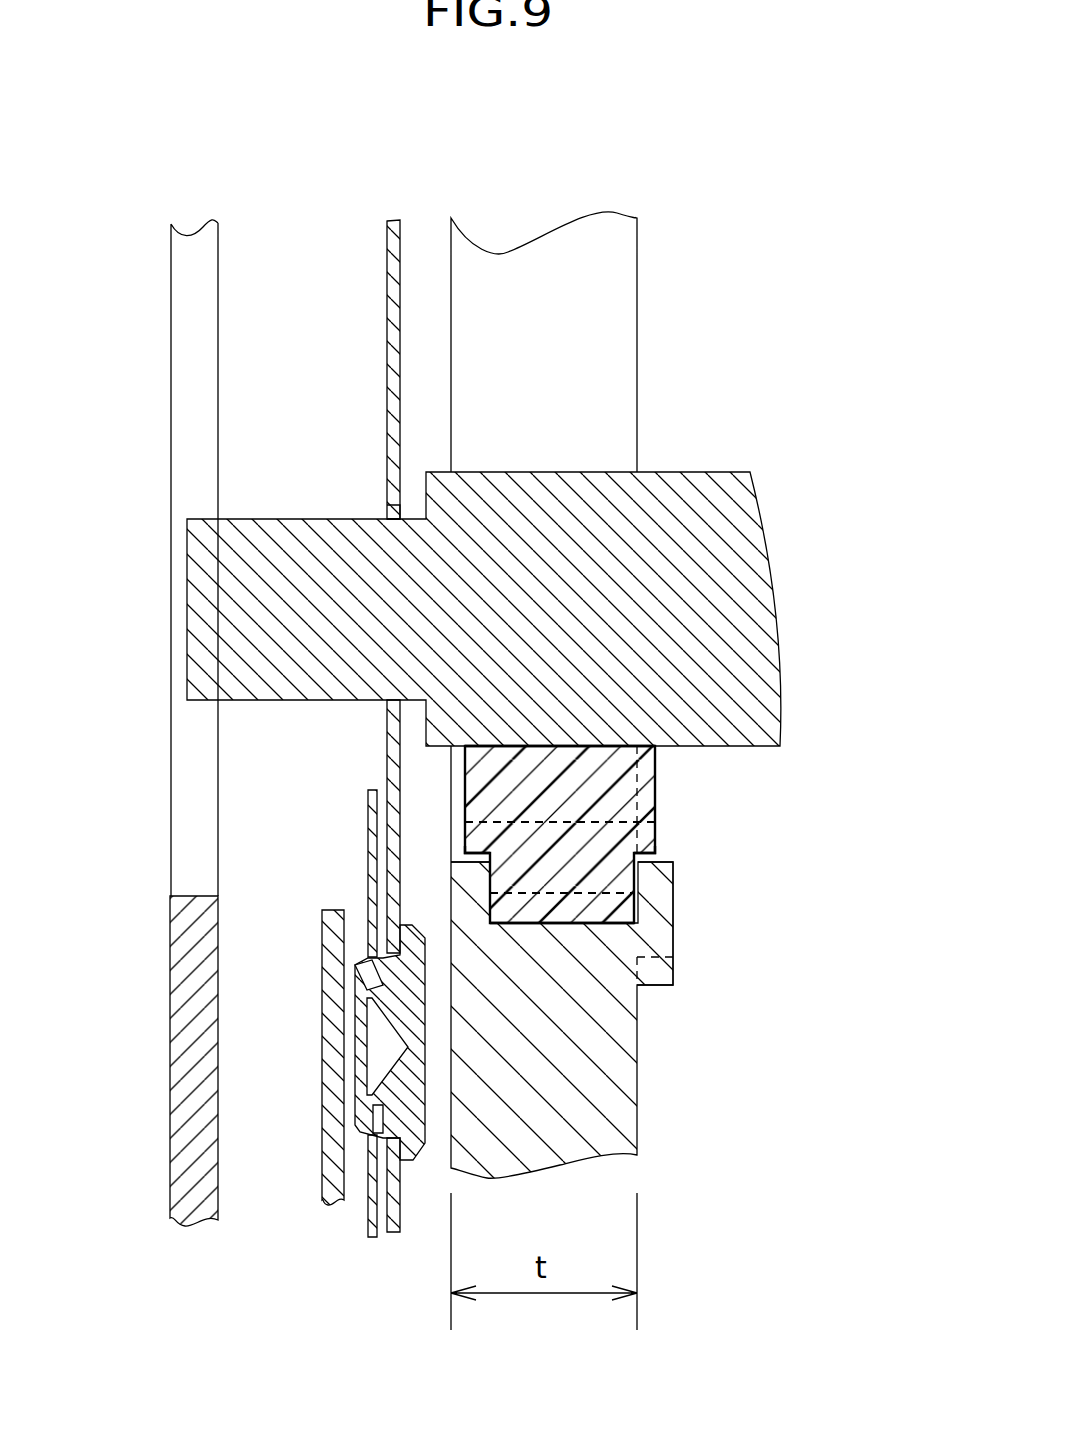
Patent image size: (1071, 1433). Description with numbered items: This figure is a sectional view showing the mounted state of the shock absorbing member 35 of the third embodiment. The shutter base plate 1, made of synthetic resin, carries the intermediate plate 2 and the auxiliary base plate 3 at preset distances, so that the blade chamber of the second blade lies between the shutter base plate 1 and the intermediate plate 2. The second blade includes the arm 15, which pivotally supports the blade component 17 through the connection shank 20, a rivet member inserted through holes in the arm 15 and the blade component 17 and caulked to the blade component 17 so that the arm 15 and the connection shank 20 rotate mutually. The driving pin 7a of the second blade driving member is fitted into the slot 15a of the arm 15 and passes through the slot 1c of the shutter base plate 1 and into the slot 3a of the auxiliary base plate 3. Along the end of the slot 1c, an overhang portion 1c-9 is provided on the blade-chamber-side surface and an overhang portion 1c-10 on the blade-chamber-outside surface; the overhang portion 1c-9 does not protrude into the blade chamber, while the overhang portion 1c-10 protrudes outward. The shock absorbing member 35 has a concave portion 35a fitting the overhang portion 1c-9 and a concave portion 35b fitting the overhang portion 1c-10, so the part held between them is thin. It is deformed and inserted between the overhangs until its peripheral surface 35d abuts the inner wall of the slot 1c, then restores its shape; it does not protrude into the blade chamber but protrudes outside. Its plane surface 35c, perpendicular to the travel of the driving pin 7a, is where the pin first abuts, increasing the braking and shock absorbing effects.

The shutter base plate 1 is at (605, 1122).
The slot 1c is at (618, 302).
The overhang portion 1c-9 is at (457, 888).
The overhang portion 1c-10 is at (655, 888).
The intermediate plate 2 is at (335, 1142).
The auxiliary base plate 3 is at (185, 1162).
The slot 3a is at (187, 417).
The driving pin 7a is at (670, 505).
The arm 15 is at (388, 344).
The slot 15a is at (383, 517).
The blade component 17 is at (370, 910).
The connection shank 20 is at (397, 1003).
The shock absorbing member 35 is at (595, 787).
The concave portion 35a is at (466, 856).
The concave portion 35b is at (660, 857).
The surface 35c is at (570, 742).
The peripheral surface 35d is at (600, 933).